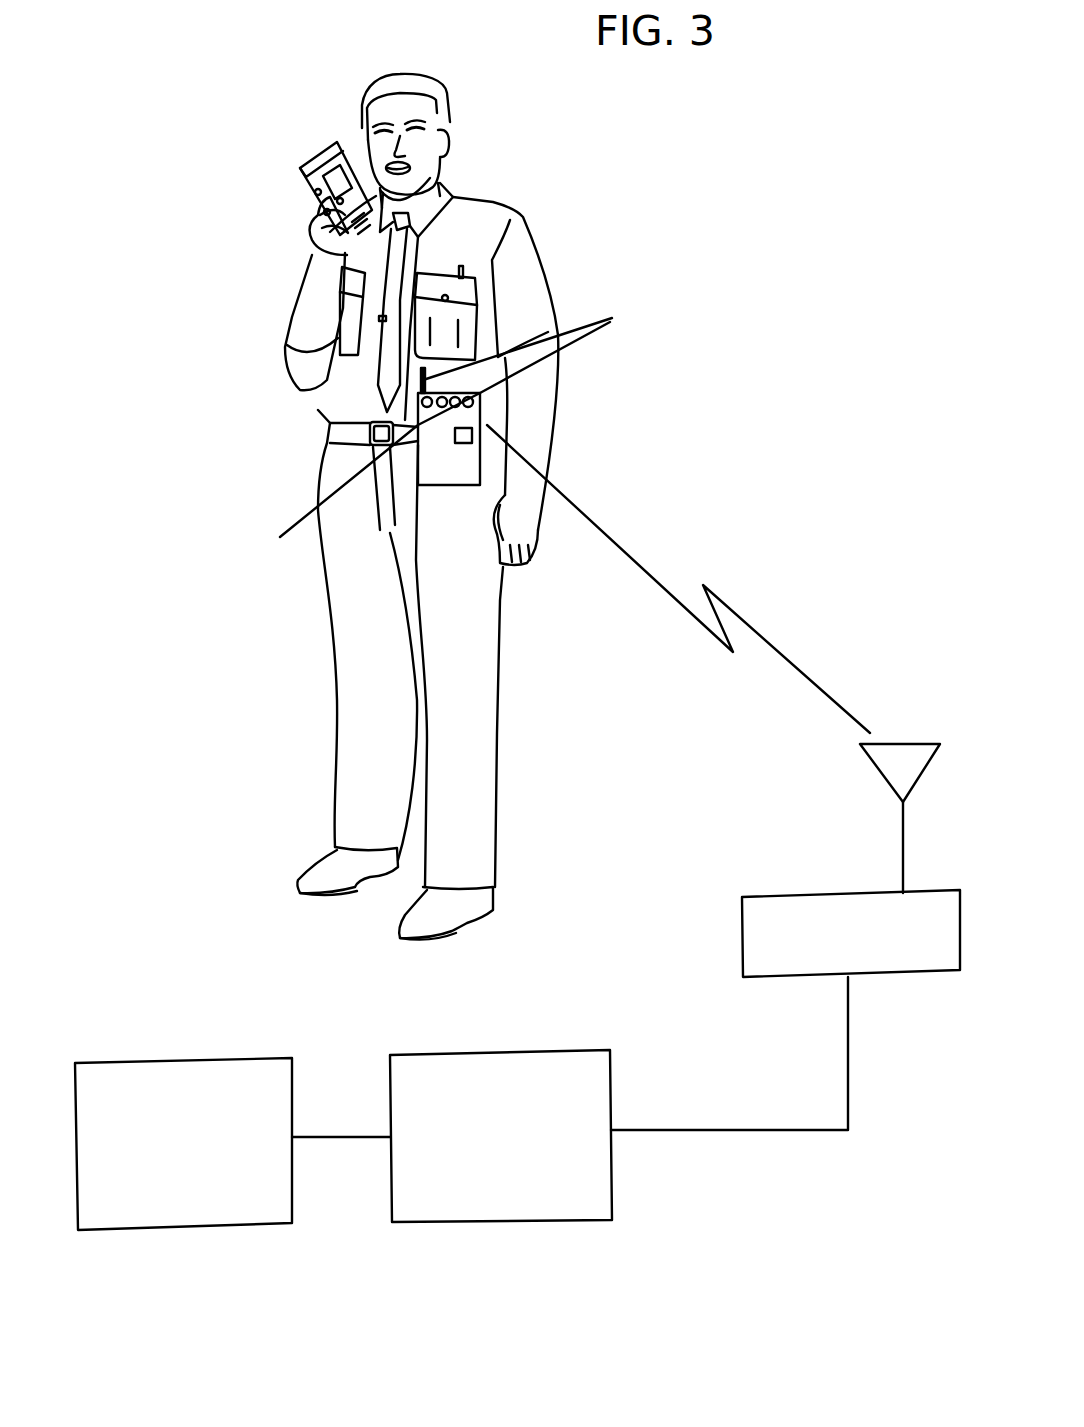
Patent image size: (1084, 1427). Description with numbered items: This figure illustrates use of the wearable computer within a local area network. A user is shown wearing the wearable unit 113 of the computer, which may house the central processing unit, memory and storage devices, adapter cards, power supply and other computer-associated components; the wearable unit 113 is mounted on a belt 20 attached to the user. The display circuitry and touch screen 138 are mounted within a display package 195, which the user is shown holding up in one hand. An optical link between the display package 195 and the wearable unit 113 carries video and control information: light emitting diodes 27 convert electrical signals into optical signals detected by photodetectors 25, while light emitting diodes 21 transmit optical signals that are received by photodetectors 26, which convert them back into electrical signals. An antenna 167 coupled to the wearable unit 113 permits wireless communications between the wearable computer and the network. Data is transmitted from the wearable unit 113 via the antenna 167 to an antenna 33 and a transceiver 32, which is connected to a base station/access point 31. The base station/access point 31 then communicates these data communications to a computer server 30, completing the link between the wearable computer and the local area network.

The display circuitry and touch screen 138 is at (291, 173).
The display package 195 is at (310, 153).
The light emitting diodes 27 is at (336, 201).
The photodetectors 26 is at (345, 228).
The light emitting diodes 21 is at (443, 426).
The antenna 167 is at (423, 378).
The belt 20 is at (340, 427).
The wearable unit 113 is at (424, 512).
The photodetectors 25 is at (480, 422).
The antenna 33 is at (875, 775).
The transceiver 32 is at (752, 895).
The base station/access point 31 is at (558, 1047).
The computer server 30 is at (263, 1055).